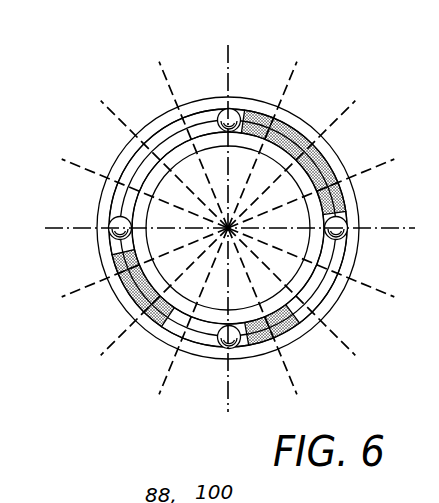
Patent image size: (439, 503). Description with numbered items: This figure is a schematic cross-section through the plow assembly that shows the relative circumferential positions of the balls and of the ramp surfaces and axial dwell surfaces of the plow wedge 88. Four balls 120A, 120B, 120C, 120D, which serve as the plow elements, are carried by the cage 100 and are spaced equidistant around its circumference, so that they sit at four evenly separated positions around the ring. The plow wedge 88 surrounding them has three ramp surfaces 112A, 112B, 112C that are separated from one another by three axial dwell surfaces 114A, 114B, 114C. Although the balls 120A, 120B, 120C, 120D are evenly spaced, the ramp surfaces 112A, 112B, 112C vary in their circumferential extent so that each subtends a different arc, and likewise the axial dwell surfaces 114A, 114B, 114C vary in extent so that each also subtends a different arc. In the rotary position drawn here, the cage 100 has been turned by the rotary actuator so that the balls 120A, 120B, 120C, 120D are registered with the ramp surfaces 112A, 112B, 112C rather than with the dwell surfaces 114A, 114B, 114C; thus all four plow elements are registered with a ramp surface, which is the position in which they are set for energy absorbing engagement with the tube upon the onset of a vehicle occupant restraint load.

The plow wedge 88 is at (148, 137).
The cage 100 is at (165, 124).
The ramp surface 112A is at (212, 105).
The ramp surface 112B is at (331, 294).
The ramp surface 112C is at (183, 345).
The axial dwell surface 114A is at (299, 117).
The axial dwell surface 114B is at (262, 347).
The axial dwell surface 114C is at (118, 305).
The ball 120A is at (237, 107).
The ball 120B is at (346, 220).
The ball 120C is at (226, 350).
The ball 120D is at (112, 219).